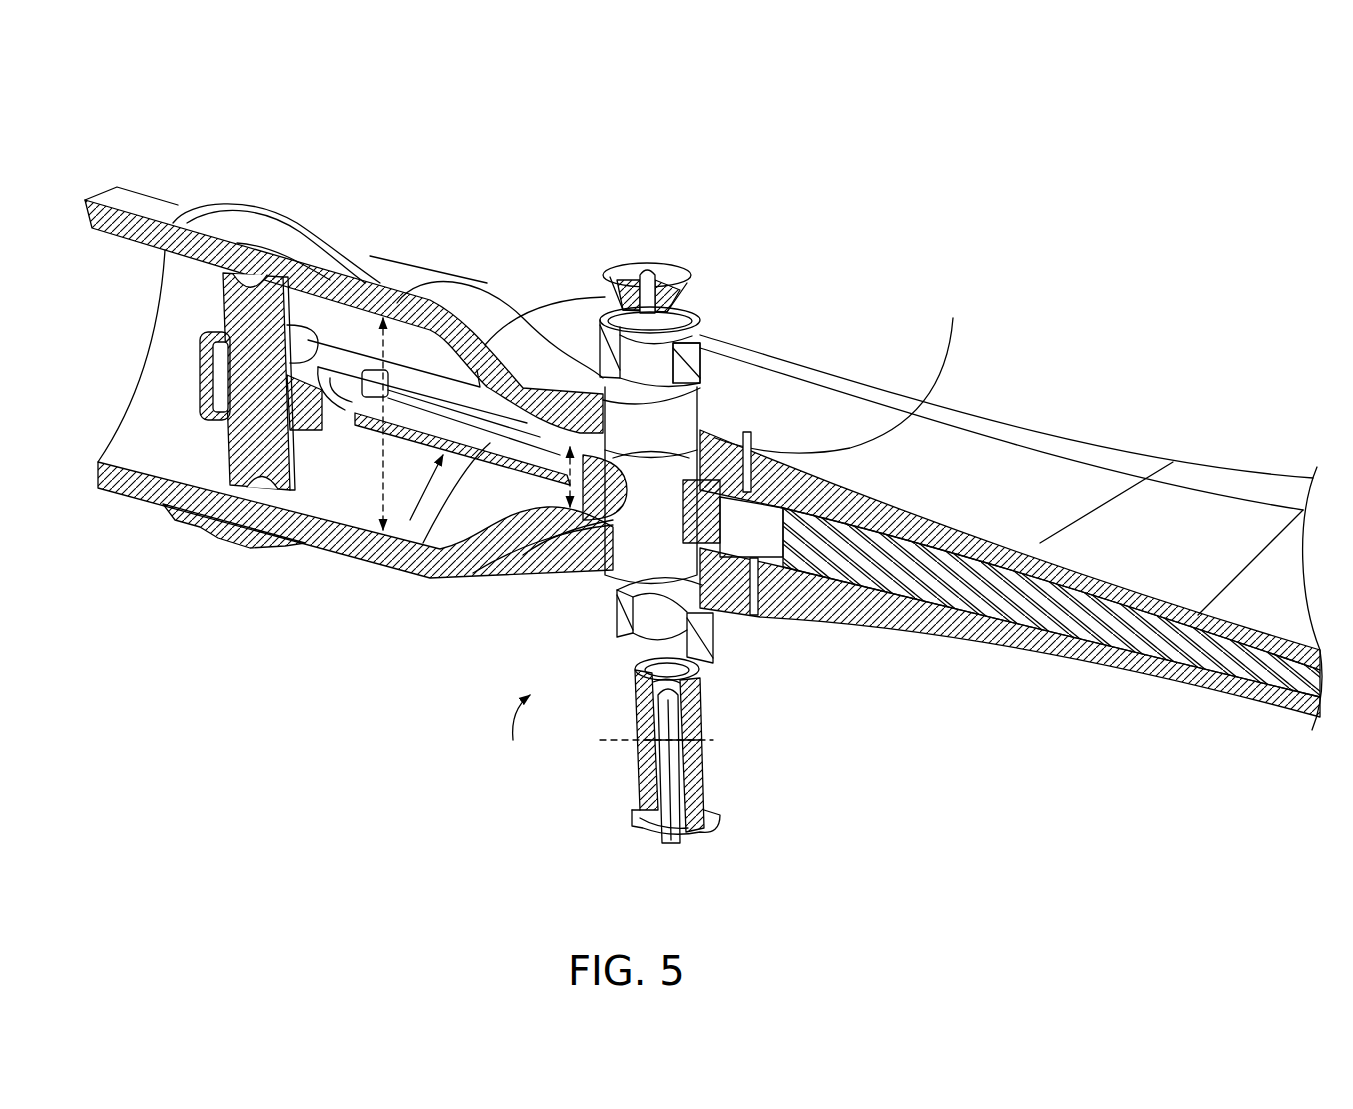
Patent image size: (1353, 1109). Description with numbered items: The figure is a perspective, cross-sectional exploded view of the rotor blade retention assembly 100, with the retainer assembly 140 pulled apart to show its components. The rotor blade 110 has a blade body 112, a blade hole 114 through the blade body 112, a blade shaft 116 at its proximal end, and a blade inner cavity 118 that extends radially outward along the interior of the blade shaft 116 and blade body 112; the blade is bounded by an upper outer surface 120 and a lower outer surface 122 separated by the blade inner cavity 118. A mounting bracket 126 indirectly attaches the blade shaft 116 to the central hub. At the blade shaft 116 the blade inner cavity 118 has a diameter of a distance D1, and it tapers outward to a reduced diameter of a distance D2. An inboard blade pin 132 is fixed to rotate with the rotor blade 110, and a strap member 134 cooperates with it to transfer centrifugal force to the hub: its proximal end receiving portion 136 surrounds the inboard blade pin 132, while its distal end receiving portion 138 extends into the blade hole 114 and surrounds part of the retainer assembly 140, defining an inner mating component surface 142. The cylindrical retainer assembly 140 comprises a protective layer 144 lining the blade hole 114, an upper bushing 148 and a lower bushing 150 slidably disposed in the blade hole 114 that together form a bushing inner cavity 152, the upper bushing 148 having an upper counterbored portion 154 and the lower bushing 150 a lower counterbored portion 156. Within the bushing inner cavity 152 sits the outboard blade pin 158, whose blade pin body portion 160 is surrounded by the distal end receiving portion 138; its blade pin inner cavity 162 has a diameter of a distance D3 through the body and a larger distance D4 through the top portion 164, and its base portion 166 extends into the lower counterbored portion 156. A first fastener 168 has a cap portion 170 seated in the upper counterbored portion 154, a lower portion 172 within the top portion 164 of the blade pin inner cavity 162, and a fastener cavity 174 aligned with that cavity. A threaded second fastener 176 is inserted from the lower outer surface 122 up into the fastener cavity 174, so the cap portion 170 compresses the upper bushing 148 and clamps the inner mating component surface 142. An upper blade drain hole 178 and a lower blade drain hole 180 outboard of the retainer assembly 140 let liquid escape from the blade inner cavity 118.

The rotor blade retention assembly 100 is at (155, 103).
The rotor blade 110 is at (980, 683).
The blade body 112 is at (1010, 650).
The blade hole 114 is at (790, 366).
The blade shaft 116 is at (380, 280).
The blade inner cavity 118 is at (177, 400).
The upper outer surface 120 is at (920, 510).
The lower outer surface 122 is at (903, 633).
The mounting bracket 126 is at (195, 523).
The inboard blade pin 132 is at (233, 317).
The strap member 134 is at (372, 525).
The proximal end receiving portion 136 is at (253, 530).
The distal end receiving portion 138 is at (410, 520).
The retainer assembly 140 is at (516, 731).
The inner mating component surface 142 is at (523, 555).
The protective layer 144 is at (700, 378).
The upper bushing 148 is at (700, 325).
The lower bushing 150 is at (713, 660).
The bushing inner cavity 152 is at (633, 353).
The upper counterbored portion 154 is at (623, 320).
The lower counterbored portion 156 is at (617, 645).
The outboard blade pin 158 is at (573, 803).
The blade pin body portion 160 is at (700, 753).
The blade pin inner cavity 162 is at (693, 680).
The top portion 164 is at (637, 677).
The base portion 166 is at (720, 830).
The first fastener 168 is at (668, 205).
The cap portion 170 is at (680, 277).
The lower portion 172 is at (680, 300).
The fastener cavity 174 is at (642, 270).
The second fastener 176 is at (673, 833).
The upper blade drain hole 178 is at (845, 372).
The lower blade drain hole 180 is at (757, 612).
The distance D1 is at (377, 473).
The distance D2 is at (568, 488).
The distance D3 is at (633, 743).
The distance D4 is at (637, 720).